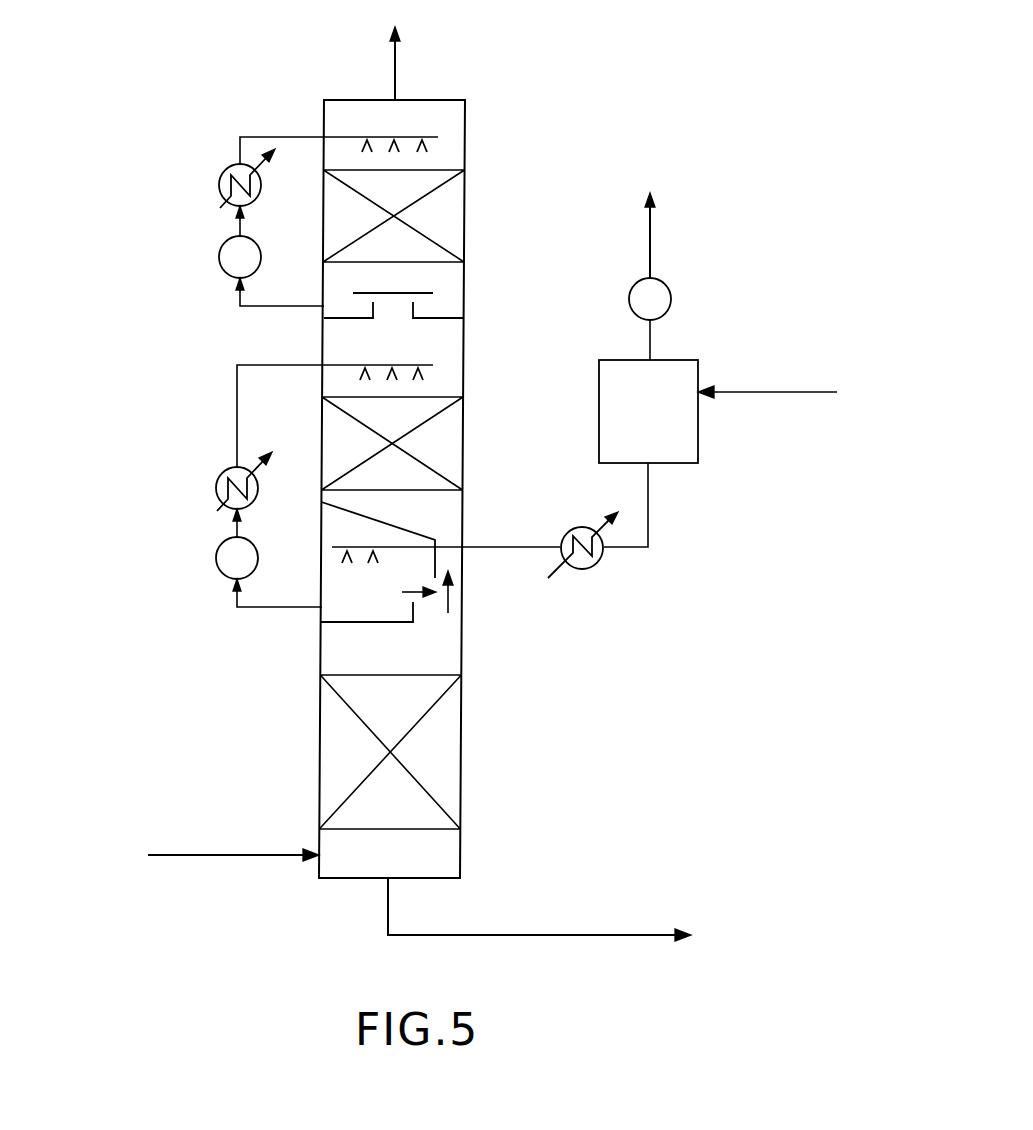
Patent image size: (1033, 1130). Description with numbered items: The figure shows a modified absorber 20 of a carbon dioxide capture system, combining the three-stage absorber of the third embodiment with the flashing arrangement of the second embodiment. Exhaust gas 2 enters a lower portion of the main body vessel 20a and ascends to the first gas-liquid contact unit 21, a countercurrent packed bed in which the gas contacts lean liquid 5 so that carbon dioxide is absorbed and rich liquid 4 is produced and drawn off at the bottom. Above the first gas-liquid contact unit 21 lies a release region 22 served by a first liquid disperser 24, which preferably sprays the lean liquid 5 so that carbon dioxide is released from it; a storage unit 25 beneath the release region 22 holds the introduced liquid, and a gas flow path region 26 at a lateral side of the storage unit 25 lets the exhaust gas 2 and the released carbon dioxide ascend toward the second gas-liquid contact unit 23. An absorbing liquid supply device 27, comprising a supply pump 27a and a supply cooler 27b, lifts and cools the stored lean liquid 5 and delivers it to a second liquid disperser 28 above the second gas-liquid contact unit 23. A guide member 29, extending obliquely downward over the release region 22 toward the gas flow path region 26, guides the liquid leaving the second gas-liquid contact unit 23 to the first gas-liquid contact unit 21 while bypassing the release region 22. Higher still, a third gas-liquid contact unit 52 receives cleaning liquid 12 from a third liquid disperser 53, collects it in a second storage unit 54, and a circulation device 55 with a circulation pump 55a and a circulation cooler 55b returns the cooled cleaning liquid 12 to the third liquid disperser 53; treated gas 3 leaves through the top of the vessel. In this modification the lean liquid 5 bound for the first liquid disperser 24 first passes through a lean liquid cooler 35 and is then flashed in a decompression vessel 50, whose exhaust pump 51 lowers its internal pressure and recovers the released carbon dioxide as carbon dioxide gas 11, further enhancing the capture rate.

The exhaust gas 2 is at (190, 852).
The treated gas 3 is at (397, 70).
The rich liquid 4 is at (610, 933).
The lean liquid 5 is at (258, 363).
The carbon dioxide gas 11 is at (652, 245).
The cleaning liquid 12 is at (263, 137).
The absorber 20 is at (522, 102).
The main body vessel 20a is at (462, 858).
The first gas-liquid contact unit 21 is at (448, 752).
The release region 22 is at (387, 604).
The second gas-liquid contact unit 23 is at (452, 441).
The first liquid disperser 24 is at (333, 550).
The storage unit 25 is at (355, 625).
The gas flow path region 26 is at (455, 605).
The absorbing liquid supply device 27 is at (215, 501).
The supply pump 27a is at (216, 558).
The supply cooler 27b is at (216, 488).
The second liquid disperser 28 is at (428, 372).
The guide member 29 is at (425, 528).
The lean liquid cooler 35 is at (590, 570).
The decompression vessel 50 is at (698, 436).
The exhaust pump 51 is at (672, 299).
The third gas-liquid contact unit 52 is at (452, 215).
The third liquid disperser 53 is at (428, 143).
The second storage unit 54 is at (447, 318).
The circulation device 55 is at (194, 186).
The circulation pump 55a is at (219, 257).
The circulation cooler 55b is at (219, 186).